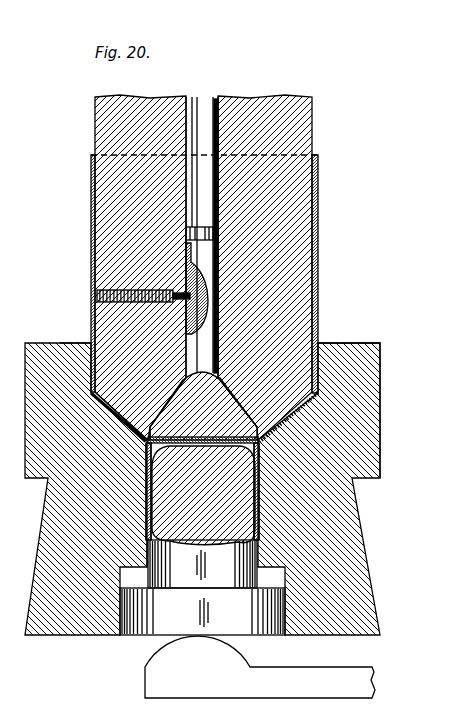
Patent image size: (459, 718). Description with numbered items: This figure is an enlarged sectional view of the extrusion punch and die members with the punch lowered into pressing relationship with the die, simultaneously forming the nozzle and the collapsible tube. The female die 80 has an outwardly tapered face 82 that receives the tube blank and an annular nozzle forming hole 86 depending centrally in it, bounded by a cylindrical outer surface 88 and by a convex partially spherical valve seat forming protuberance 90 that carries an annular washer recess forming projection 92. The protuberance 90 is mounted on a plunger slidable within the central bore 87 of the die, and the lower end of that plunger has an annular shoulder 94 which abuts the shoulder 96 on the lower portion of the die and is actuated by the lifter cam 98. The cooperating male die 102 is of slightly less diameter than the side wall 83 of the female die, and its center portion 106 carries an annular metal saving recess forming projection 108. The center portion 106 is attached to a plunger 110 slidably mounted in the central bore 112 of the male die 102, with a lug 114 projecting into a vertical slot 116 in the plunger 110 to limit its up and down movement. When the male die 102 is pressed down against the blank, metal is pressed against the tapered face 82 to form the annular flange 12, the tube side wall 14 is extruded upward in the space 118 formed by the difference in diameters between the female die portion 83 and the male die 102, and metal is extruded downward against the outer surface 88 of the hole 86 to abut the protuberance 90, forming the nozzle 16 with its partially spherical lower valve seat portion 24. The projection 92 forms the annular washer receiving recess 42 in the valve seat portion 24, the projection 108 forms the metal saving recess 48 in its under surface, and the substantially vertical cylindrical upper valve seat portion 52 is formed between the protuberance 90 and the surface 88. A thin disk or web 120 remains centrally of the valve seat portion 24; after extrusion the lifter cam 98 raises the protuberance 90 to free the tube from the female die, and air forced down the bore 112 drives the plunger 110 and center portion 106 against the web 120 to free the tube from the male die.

The annular flange 12 is at (290, 410).
The side wall 14 is at (317, 280).
The nozzle 16 is at (147, 463).
The partially spherical lower valve seat portion 24 is at (145, 462).
The annular washer receiving recess 42 is at (147, 440).
The metal saving annular recess 48 is at (153, 433).
The cylindrical upper valve seat portion 52 is at (257, 500).
The female die 80 is at (65, 350).
The outwardly tapered face 82 is at (143, 417).
The side wall of female die 83 is at (83, 343).
The annular nozzle forming hole 86 is at (258, 480).
The central bore 87 is at (145, 547).
The cylindrical outer surface 88 is at (147, 475).
The valve seat forming protuberance 90 is at (260, 455).
The annular washer recess forming projection 92 is at (273, 438).
The annular shoulder 94 is at (155, 627).
The shoulder 96 is at (120, 580).
The lifter cam 98 is at (167, 670).
The male die 102 is at (283, 318).
The center portion 106 is at (230, 410).
The metal saving recess forming projection 108 is at (245, 440).
The plunger 110 is at (222, 280).
The central bore 112 is at (200, 108).
The lug 114 is at (178, 293).
The vertical slot 116 is at (182, 265).
The space 118 is at (313, 357).
The thin disk or web 120 is at (200, 447).